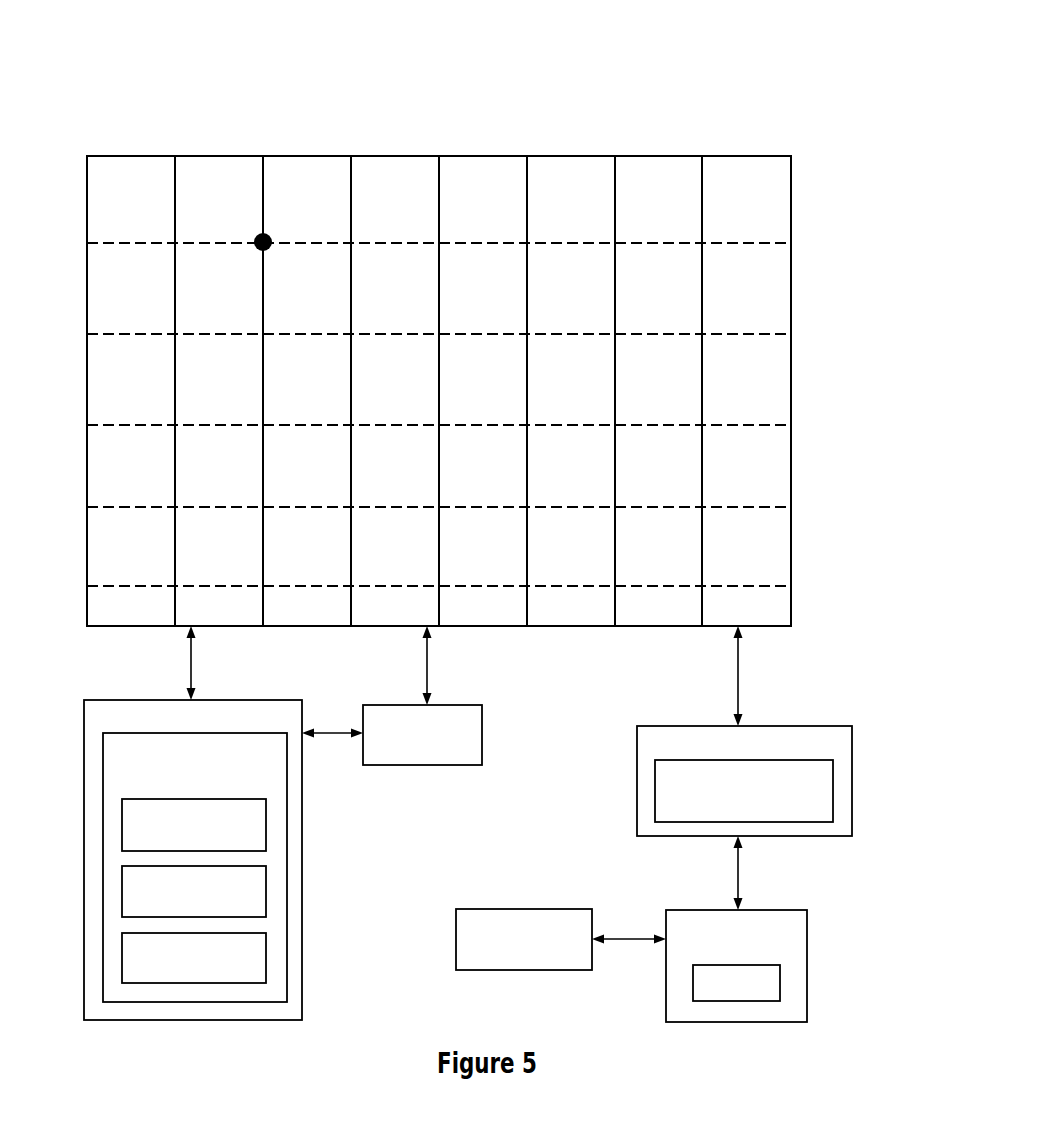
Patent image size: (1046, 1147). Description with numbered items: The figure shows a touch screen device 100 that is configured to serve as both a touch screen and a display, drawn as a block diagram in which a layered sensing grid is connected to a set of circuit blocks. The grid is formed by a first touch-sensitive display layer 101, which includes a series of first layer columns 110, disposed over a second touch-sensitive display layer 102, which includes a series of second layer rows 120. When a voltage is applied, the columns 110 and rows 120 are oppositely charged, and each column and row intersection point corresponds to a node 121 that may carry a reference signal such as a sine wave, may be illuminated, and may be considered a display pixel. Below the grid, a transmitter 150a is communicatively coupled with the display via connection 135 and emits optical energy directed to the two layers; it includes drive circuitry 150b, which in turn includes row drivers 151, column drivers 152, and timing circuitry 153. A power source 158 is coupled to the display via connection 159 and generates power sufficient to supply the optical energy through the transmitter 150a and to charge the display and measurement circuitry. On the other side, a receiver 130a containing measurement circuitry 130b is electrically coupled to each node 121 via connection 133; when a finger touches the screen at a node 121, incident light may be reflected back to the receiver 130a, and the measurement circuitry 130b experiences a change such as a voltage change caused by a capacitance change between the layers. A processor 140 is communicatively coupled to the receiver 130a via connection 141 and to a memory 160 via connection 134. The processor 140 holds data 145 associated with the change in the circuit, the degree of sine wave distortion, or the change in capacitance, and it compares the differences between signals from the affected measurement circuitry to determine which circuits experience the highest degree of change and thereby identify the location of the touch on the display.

The touch screen device 100 is at (657, 80).
The first touch-sensitive display layer 101 is at (347, 148).
The first layer columns 110 is at (438, 391).
The second touch-sensitive display layer 102 is at (798, 329).
The second layer rows 120 is at (439, 414).
The node 121 is at (258, 239).
The connection 135 is at (195, 661).
The connection 159 is at (431, 661).
The connection 133 is at (741, 671).
The connection 141 is at (741, 875).
The connection 134 is at (632, 940).
The transmitter 150a is at (225, 727).
The drive circuitry 150b is at (263, 762).
The row drivers 151 is at (249, 835).
The column drivers 152 is at (259, 900).
The timing circuitry 153 is at (259, 967).
The power source 158 is at (437, 754).
The receiver 130a is at (803, 749).
The measurement circuitry 130b is at (744, 791).
The memory 160 is at (573, 950).
The processor 140 is at (793, 944).
The data 145 is at (772, 993).